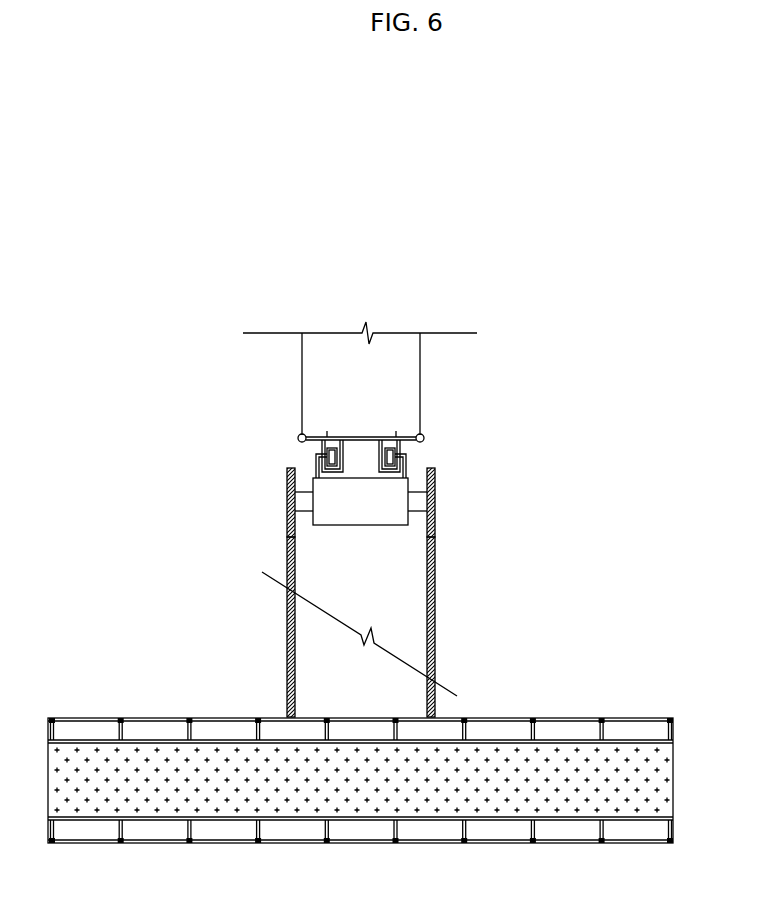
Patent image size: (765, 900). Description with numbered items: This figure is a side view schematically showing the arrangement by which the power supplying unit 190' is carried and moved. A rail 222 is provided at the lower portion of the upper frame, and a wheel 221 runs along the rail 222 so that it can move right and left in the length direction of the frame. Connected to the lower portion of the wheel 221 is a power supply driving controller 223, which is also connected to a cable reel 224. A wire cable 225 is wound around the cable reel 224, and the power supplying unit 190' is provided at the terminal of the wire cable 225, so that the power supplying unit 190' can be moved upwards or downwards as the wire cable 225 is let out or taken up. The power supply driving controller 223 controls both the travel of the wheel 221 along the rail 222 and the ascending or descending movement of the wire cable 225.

The power supplying unit 190' is at (360, 751).
The wheel 221 is at (392, 455).
The rail 222 is at (322, 462).
The power supply driving controller 223 is at (361, 501).
The cable reel 224 is at (437, 506).
The wire cable 225 is at (437, 580).